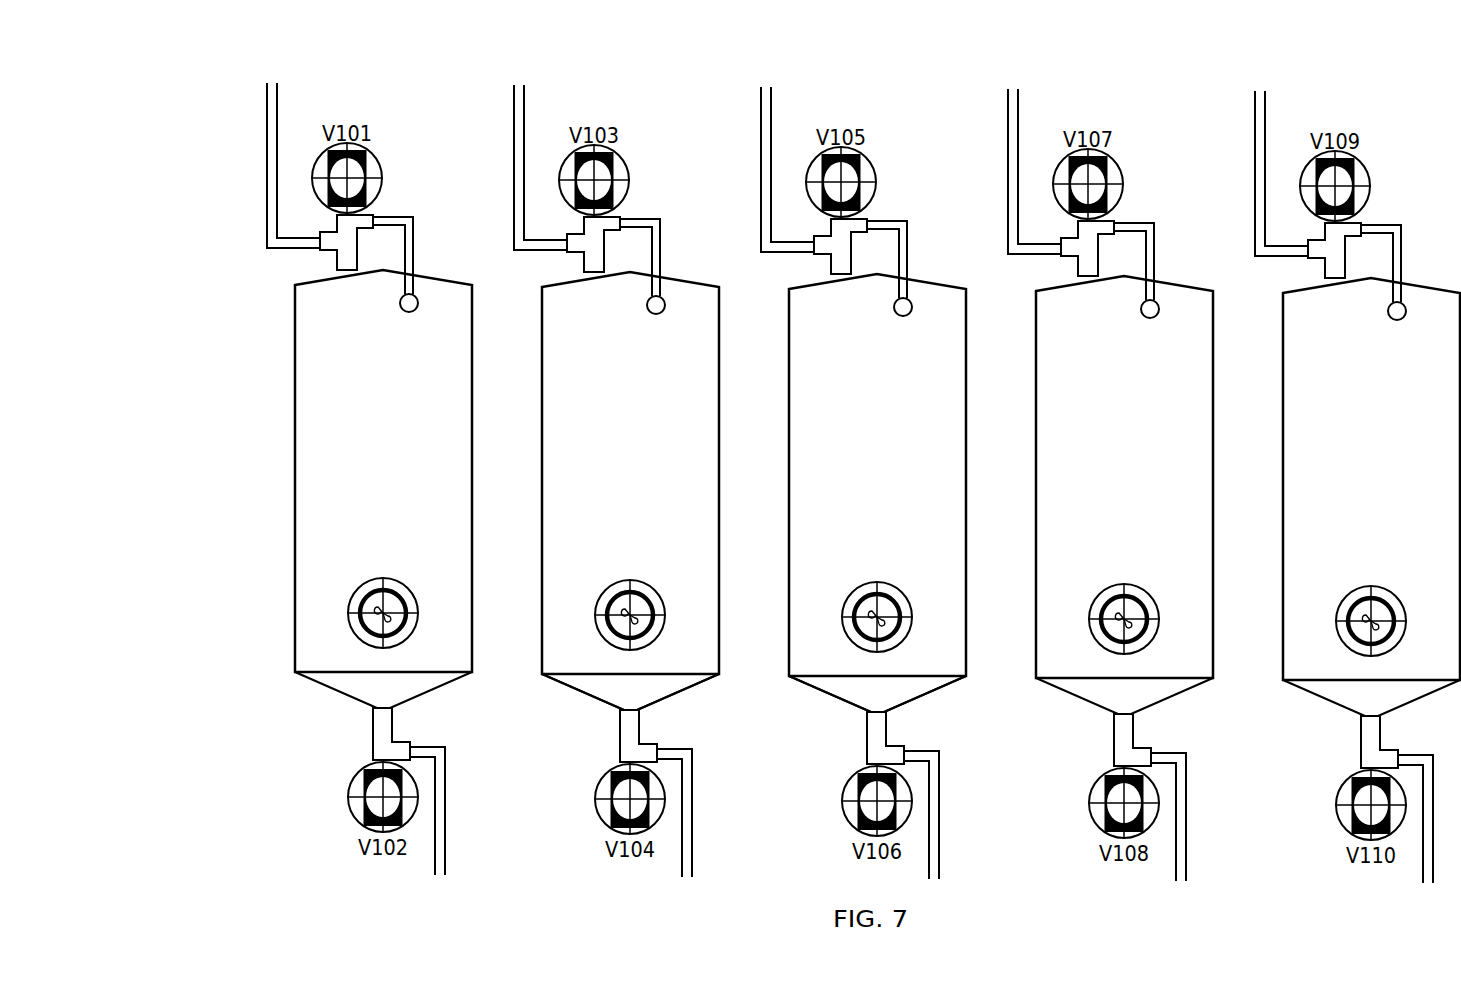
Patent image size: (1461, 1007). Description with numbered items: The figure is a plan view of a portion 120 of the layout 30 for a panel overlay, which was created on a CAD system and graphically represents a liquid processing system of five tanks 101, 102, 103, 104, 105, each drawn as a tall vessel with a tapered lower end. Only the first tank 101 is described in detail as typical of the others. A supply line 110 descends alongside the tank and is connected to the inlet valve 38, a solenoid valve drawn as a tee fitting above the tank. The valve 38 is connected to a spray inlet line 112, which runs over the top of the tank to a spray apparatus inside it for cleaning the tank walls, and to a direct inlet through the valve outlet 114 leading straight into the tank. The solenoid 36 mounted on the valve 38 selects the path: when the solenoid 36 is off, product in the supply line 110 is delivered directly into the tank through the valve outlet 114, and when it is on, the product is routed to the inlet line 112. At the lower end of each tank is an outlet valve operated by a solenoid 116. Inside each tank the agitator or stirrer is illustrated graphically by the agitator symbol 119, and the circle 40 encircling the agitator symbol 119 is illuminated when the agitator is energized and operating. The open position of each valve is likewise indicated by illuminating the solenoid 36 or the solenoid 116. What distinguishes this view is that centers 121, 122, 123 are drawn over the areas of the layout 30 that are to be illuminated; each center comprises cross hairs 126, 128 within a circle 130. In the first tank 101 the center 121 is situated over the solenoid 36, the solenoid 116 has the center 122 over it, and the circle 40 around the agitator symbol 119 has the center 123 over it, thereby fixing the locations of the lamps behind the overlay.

The layout 30 is at (340, 489).
The solenoid 36 is at (341, 154).
The inlet valve 38 is at (294, 251).
The circle 40 is at (406, 603).
The first tank 101 is at (340, 489).
The tank 102 is at (630, 491).
The tank 103 is at (877, 493).
The tank 104 is at (1124, 495).
The tank 105 is at (1371, 497).
The supply line 110 is at (248, 150).
The spray inlet line 112 is at (433, 264).
The valve outlet 114 is at (397, 484).
The solenoid 116 is at (362, 791).
The agitator symbol 119 is at (429, 614).
The portion 120 is at (754, 713).
The center 121 is at (389, 170).
The center 122 is at (361, 791).
The center 123 is at (430, 614).
The cross hair 126 is at (389, 180).
The cross hair 128 is at (379, 154).
The circle 130 is at (389, 180).